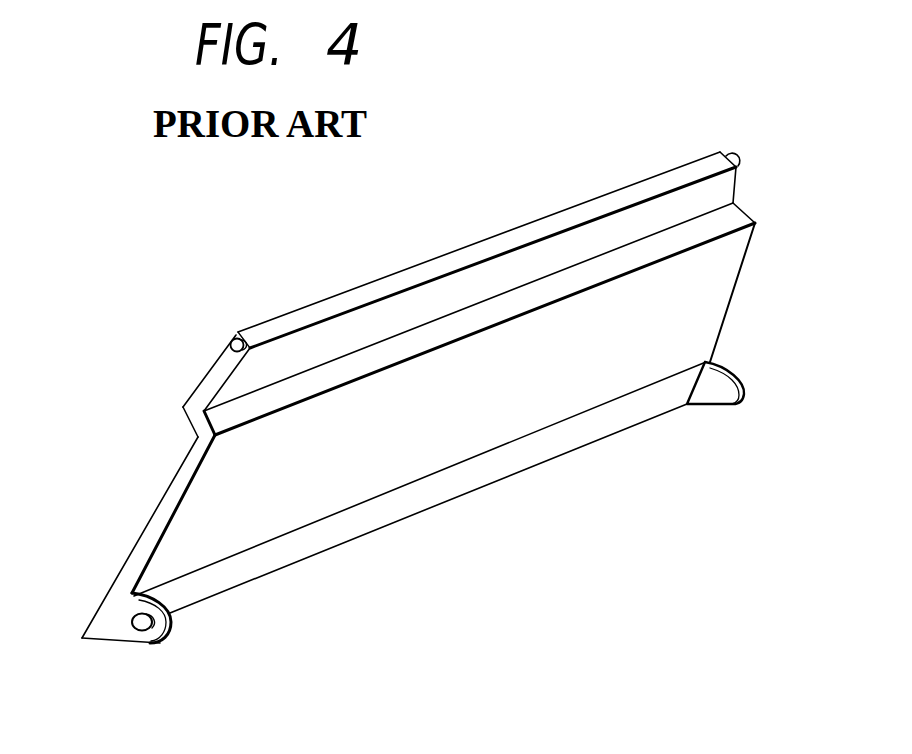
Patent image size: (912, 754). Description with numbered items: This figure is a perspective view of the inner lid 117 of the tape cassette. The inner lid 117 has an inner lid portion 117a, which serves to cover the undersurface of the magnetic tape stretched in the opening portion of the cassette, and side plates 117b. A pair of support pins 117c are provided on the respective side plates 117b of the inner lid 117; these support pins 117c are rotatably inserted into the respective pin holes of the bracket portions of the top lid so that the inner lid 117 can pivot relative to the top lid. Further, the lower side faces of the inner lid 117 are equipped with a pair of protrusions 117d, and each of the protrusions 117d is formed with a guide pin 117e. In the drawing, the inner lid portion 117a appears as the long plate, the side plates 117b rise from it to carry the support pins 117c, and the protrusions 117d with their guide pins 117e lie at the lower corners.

The inner lid 117 is at (434, 397).
The inner lid portion 117a is at (480, 438).
The side plates 117b is at (165, 500).
The support pins 117c is at (230, 343).
The protrusions 117d is at (110, 610).
The guide pins 117e is at (141, 631).